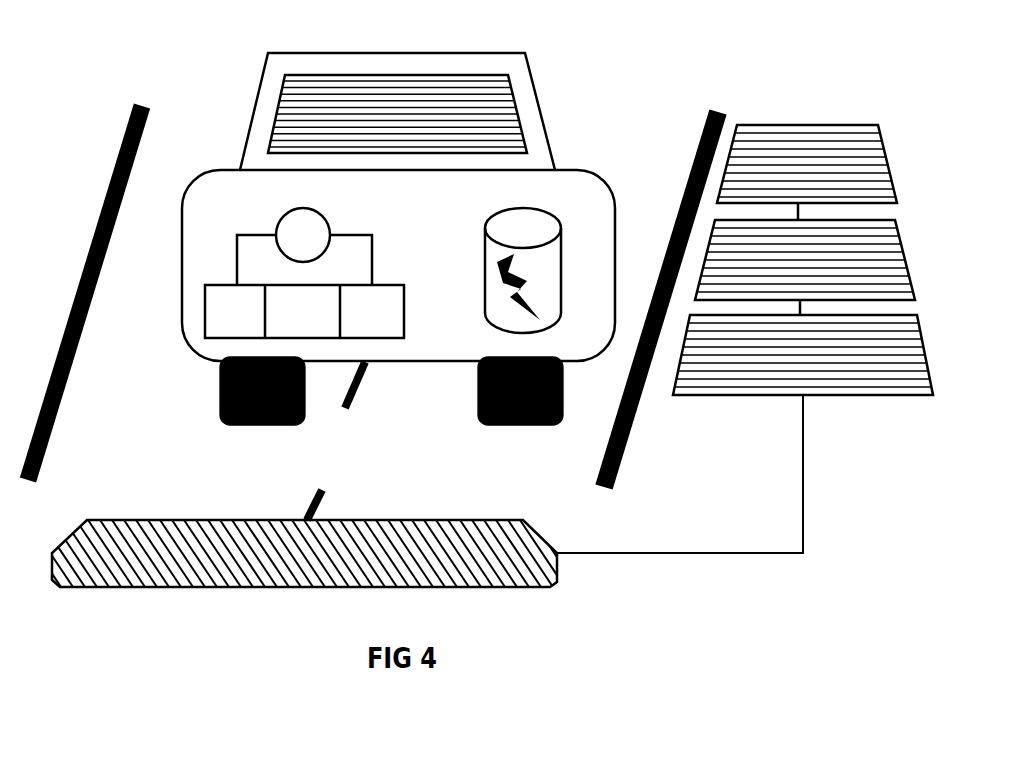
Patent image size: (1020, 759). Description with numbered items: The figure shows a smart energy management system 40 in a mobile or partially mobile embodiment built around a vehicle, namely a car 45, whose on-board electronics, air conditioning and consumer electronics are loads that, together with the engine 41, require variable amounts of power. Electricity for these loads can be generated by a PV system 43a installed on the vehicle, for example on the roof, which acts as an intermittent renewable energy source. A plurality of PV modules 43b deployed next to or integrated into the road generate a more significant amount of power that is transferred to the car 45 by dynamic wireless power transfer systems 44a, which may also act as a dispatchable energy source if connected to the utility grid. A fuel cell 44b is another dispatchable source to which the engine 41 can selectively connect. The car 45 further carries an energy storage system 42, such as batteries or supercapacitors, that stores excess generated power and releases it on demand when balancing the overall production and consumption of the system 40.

The smart energy management system 40 is at (645, 56).
The engine 41 is at (283, 213).
The energy storage system 42 is at (548, 229).
The PV system 43a is at (277, 113).
The PV modules 43b is at (808, 108).
The dynamic wireless power transfer system 44a is at (477, 521).
The fuel cell 44b is at (397, 337).
The car 45 is at (182, 273).